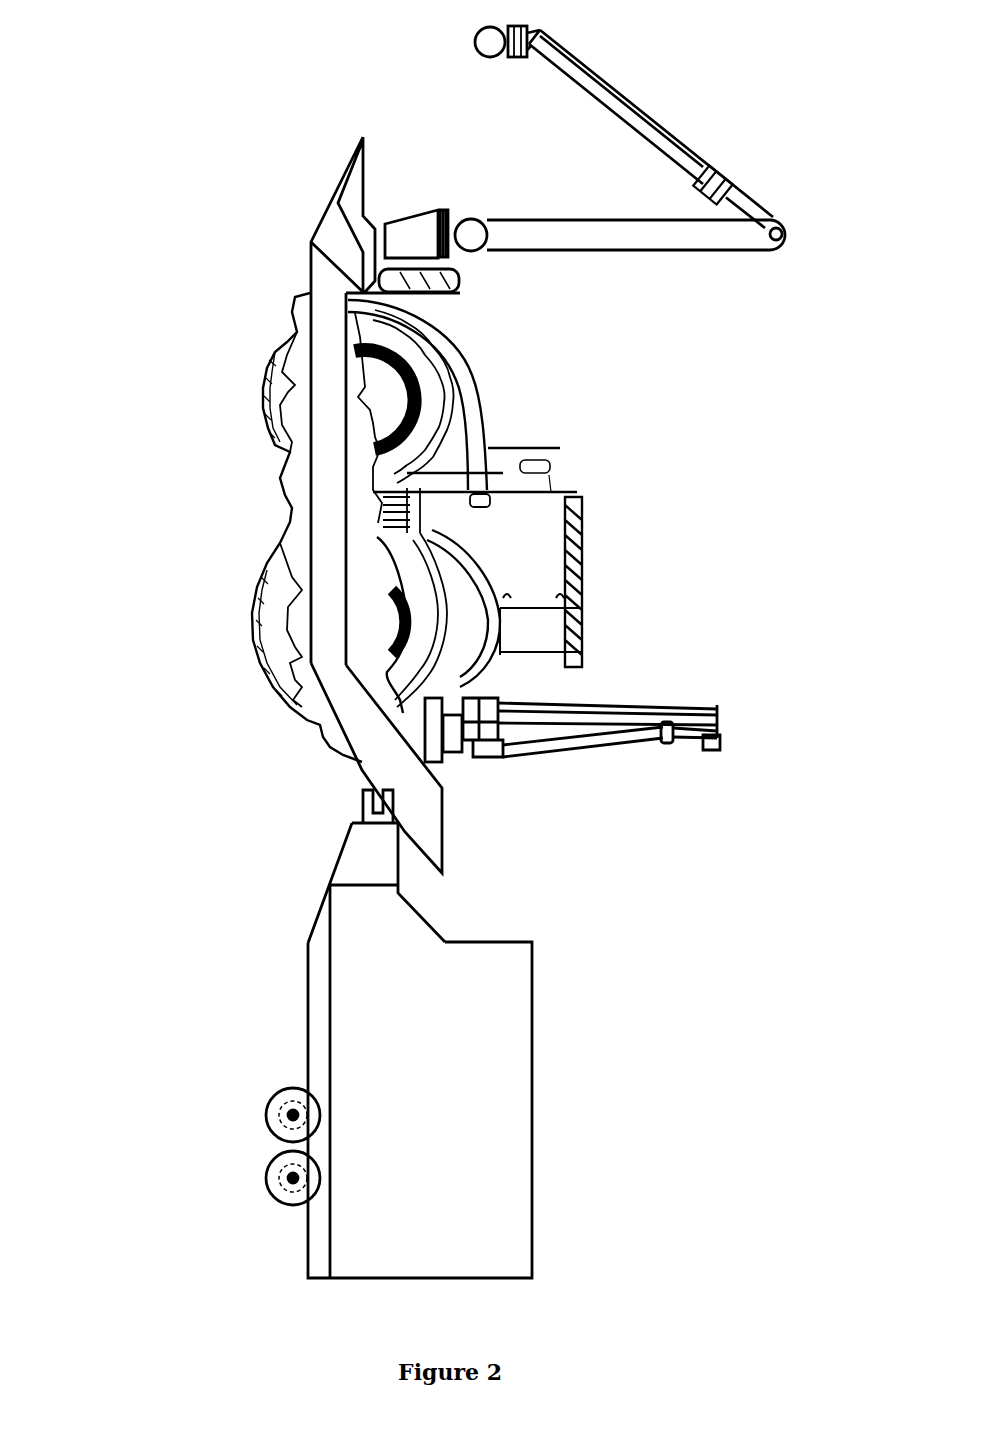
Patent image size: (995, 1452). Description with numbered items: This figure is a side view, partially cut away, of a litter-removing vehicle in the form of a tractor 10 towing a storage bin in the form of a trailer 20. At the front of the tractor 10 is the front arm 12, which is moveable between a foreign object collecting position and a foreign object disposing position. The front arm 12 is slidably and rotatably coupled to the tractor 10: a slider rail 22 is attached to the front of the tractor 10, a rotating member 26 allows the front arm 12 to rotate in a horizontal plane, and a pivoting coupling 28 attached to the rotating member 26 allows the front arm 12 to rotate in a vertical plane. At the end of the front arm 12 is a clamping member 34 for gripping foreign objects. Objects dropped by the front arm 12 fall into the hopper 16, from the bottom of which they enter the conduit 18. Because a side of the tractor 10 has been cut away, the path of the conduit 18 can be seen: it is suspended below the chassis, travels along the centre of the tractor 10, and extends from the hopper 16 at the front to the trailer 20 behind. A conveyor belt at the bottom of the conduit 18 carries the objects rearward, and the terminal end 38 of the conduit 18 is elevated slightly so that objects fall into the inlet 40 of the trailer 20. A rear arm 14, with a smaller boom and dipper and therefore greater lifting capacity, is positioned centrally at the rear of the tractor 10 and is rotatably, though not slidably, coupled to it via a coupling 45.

The tractor 10 is at (158, 215).
The front arm 12 is at (740, 134).
The rear arm 14 is at (685, 688).
The hopper 16 is at (340, 213).
The conduit 18 is at (327, 354).
The storage bin 20 is at (480, 1054).
The slider rail 22 is at (430, 283).
The rotating member 26 is at (413, 243).
The pivoting coupling 28 is at (481, 241).
The clamping member 34 is at (475, 41).
The terminal end 38 is at (428, 820).
The inlet 40 is at (450, 917).
The coupling 45 is at (445, 744).